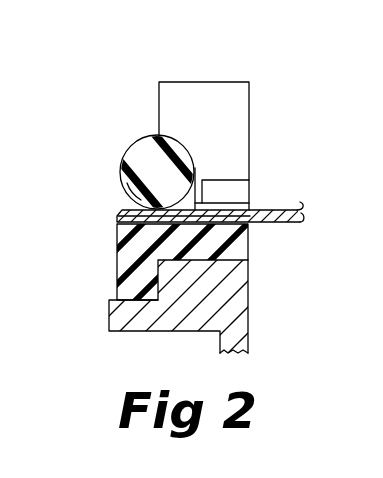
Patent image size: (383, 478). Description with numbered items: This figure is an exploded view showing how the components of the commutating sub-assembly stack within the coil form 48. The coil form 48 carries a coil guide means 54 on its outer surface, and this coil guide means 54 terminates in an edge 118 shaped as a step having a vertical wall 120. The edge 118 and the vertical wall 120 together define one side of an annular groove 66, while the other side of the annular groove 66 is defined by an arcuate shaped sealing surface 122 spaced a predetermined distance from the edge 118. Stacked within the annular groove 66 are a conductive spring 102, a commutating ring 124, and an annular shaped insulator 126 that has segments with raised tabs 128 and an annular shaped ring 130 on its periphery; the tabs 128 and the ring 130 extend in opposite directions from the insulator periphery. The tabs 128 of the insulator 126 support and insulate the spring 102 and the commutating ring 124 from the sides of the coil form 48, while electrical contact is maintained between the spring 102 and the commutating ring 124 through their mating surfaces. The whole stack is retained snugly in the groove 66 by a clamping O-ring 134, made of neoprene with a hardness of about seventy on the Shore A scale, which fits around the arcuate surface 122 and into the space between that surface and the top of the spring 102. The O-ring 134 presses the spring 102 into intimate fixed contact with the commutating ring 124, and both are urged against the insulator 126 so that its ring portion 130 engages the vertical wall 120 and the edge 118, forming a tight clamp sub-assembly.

The coil form 48 is at (237, 123).
The coil guide means 54 is at (142, 365).
The annular groove 66 is at (195, 203).
The conductive spring 102 is at (278, 222).
The edge 118 is at (125, 313).
The vertical wall 120 is at (160, 283).
The arcuate shaped sealing surface 122 is at (169, 136).
The commutating ring 124 is at (115, 222).
The annular shaped insulator 126 is at (115, 240).
The raised tabs 128 is at (235, 192).
The annular shaped ring 130 is at (130, 260).
The O-ring 134 is at (137, 168).